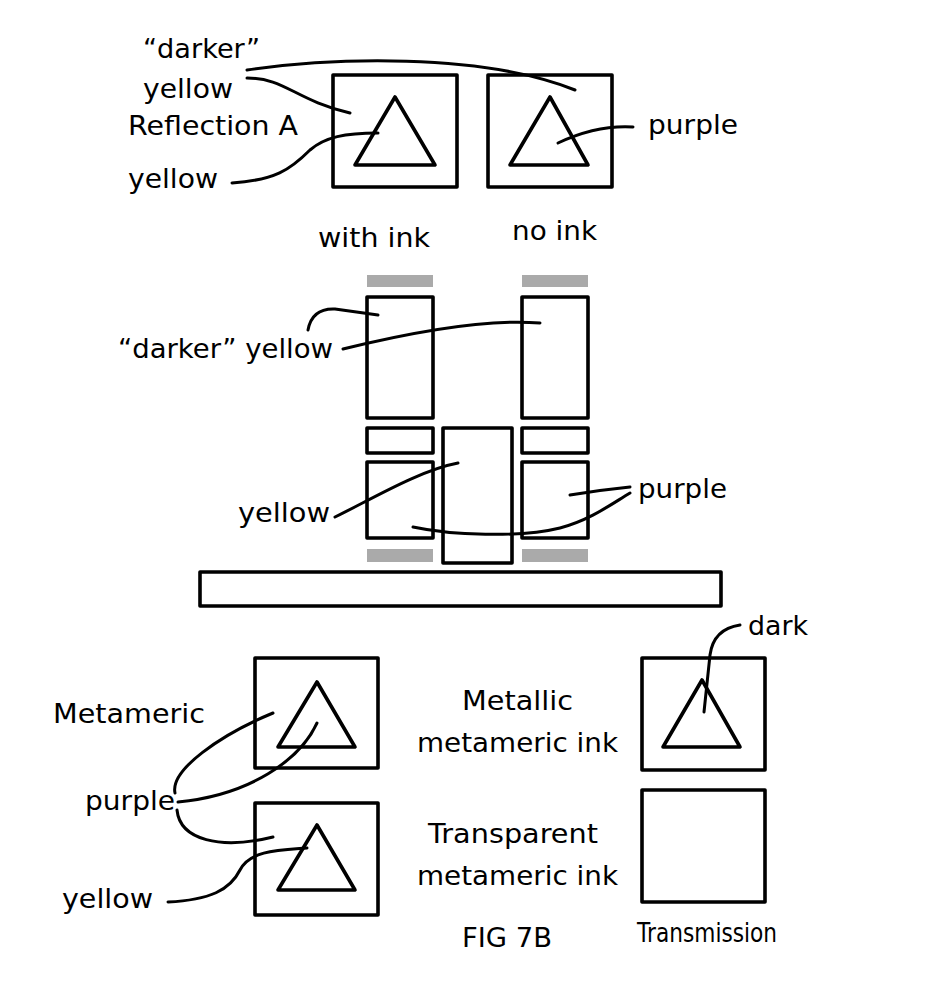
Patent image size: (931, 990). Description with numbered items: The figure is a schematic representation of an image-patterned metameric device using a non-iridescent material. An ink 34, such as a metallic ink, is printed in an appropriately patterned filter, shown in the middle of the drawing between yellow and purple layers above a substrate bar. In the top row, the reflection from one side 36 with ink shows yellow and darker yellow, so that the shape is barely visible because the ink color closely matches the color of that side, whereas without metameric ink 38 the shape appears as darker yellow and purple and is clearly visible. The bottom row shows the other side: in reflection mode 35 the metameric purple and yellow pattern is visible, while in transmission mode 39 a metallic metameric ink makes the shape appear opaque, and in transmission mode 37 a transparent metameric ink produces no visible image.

The ink 34 is at (477, 427).
The reflection mode 35 is at (316, 878).
The side 36 is at (361, 421).
The transmission mode 37 is at (727, 846).
The non-metameric ink view 38 is at (577, 144).
The transmission mode 39 is at (727, 714).